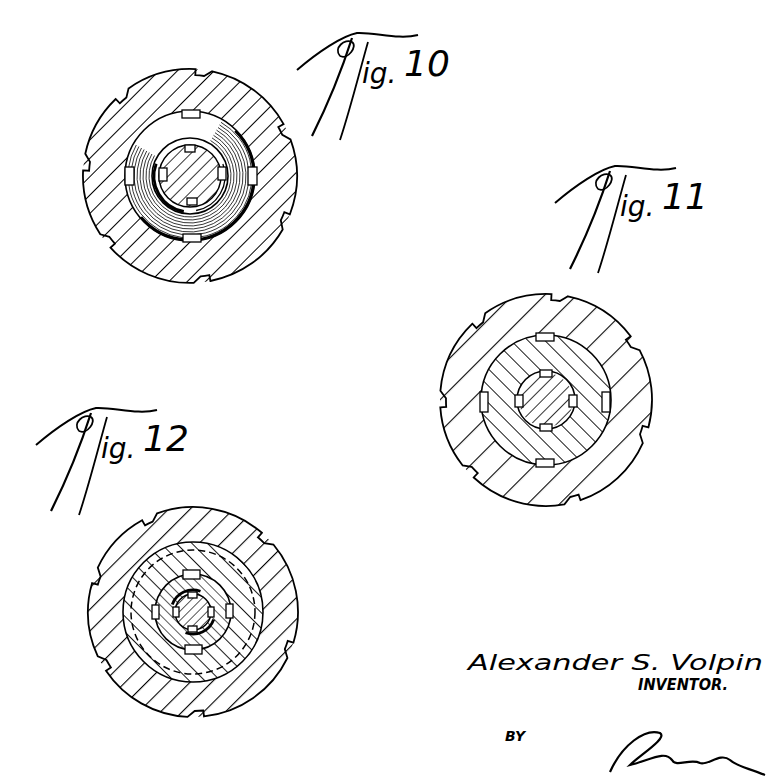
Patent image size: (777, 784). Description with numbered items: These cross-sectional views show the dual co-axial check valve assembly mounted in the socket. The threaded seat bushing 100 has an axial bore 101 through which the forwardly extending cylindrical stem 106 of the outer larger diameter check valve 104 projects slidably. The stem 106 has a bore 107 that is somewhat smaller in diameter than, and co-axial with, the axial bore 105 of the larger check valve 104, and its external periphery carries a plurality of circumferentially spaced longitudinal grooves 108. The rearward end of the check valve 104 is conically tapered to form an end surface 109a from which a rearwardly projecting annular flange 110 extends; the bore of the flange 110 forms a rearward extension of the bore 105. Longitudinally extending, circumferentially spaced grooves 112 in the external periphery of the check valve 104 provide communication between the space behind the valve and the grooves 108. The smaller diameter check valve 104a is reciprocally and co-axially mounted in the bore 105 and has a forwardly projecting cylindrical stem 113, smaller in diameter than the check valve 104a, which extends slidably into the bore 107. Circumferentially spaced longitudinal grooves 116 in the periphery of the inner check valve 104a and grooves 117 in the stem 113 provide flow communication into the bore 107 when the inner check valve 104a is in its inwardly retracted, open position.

In FIG. 12, the threaded seat bushing 100 is at (130, 604).
In FIG. 12, the axial bore 101 is at (155, 626).
In FIG. 10, the outer larger diameter check valve 104 is at (147, 132).
In FIG. 11, the outer larger diameter check valve 104 is at (490, 415).
In FIG. 10, the smaller diameter check valve 104a is at (173, 160).
In FIG. 11, the smaller diameter check valve 104a is at (526, 378).
In FIG. 10, the axial bore 105 is at (163, 183).
In FIG. 11, the axial bore 105 is at (566, 390).
In FIG. 12, the cylindrical stem 106 is at (217, 587).
In FIG. 12, the bore 107 is at (178, 594).
In FIG. 12, the longitudinal grooves 108 is at (190, 570).
In FIG. 10, the end surface 109a is at (143, 204).
In FIG. 10, the annular flange 110 is at (222, 193).
In FIG. 10, the grooves 112 is at (190, 109).
In FIG. 11, the grooves 112 is at (481, 402).
In FIG. 12, the cylindrical stem 113 is at (203, 626).
In FIG. 10, the longitudinal grooves 116 is at (227, 172).
In FIG. 11, the longitudinal grooves 116 is at (575, 402).
In FIG. 12, the longitudinal grooves 117 is at (223, 597).